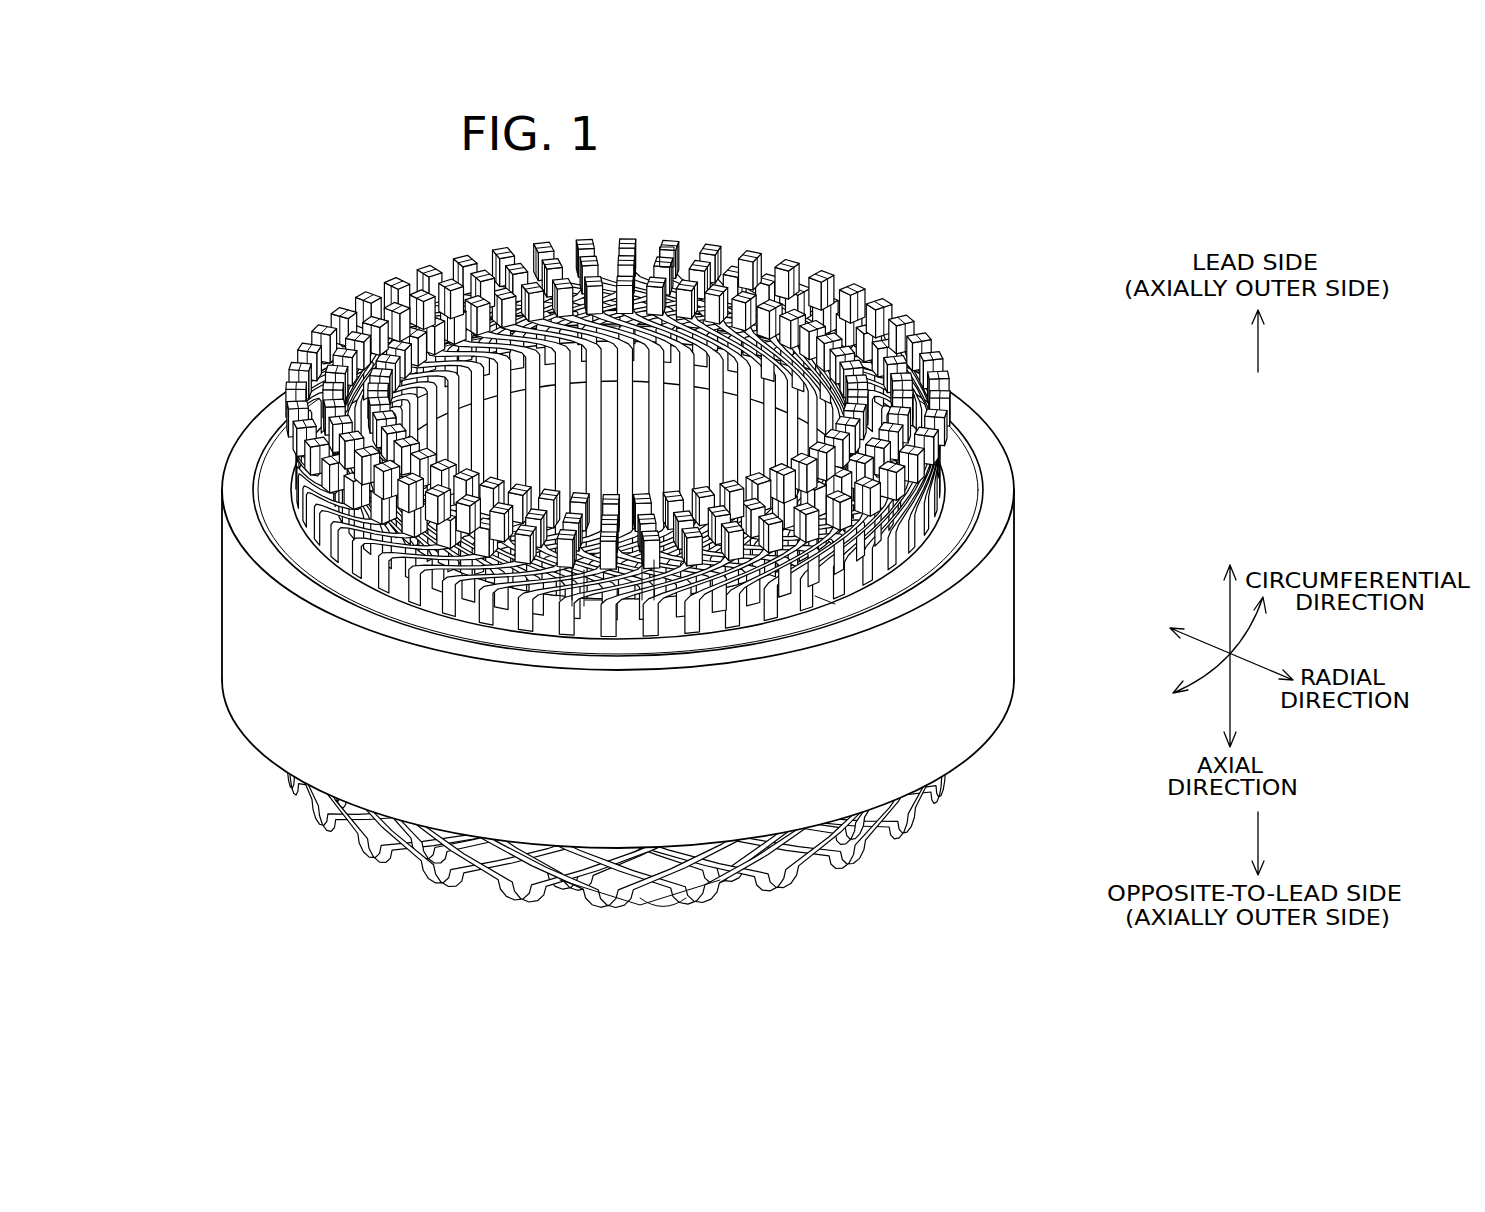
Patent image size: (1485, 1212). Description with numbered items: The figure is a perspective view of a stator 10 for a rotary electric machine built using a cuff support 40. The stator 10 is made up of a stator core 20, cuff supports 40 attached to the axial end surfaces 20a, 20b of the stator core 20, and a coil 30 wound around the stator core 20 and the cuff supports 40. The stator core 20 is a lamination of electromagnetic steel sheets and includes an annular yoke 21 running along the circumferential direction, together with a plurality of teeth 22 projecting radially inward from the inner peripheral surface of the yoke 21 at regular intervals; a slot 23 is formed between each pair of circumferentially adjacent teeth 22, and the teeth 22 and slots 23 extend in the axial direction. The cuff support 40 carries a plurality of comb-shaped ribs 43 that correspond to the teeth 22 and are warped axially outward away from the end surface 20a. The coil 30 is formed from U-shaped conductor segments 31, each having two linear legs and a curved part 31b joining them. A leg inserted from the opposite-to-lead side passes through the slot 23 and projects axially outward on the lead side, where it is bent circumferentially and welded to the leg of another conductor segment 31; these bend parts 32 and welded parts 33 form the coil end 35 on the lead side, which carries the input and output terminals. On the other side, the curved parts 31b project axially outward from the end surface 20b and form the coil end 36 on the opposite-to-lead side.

The stator 10 is at (194, 375).
The stator core 20 is at (696, 507).
The axial end surface 20a is at (992, 520).
The axial end surface 20b is at (992, 730).
The yoke 21 is at (993, 483).
The teeth 22 is at (597, 407).
The slot 23 is at (610, 423).
The coil 30 is at (717, 239).
The conductor segment 31 is at (672, 248).
The curved part 31b is at (663, 913).
The bend part 32 is at (577, 606).
The welded part 33 is at (647, 560).
The coil end 35 is at (689, 543).
The coil end 36 is at (784, 911).
The cuff support 40 is at (976, 436).
The ribs 43 is at (823, 600).